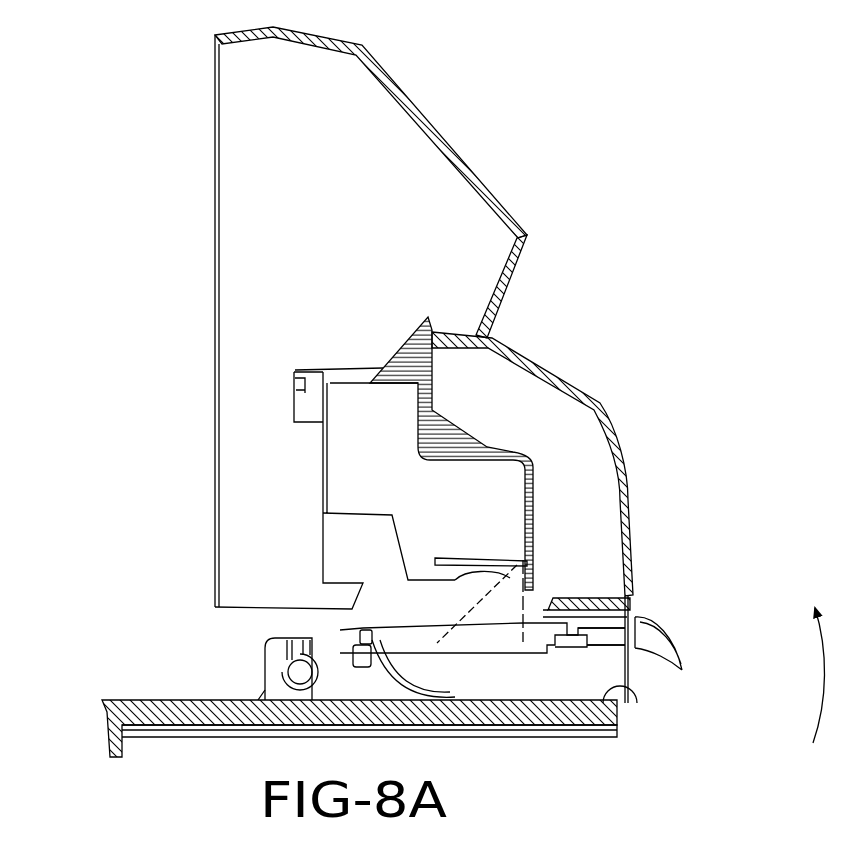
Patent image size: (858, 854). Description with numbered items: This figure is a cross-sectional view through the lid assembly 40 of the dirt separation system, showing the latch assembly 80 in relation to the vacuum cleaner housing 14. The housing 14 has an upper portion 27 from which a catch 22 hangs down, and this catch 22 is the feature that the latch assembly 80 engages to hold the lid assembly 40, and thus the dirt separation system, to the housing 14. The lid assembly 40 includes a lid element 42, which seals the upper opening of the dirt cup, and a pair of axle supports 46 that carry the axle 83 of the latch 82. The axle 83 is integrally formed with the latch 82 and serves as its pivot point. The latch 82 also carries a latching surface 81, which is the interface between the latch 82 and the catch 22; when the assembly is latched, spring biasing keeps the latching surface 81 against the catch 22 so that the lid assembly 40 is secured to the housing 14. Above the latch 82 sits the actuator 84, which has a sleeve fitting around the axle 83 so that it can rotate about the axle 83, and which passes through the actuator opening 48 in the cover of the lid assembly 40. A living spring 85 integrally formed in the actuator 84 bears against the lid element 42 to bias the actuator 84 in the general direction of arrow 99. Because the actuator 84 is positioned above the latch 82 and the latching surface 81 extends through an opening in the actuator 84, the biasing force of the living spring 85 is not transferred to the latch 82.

The vacuum cleaner housing 14 is at (488, 144).
The upper portion 27 is at (510, 212).
The catch 22 is at (535, 502).
The lid assembly 40 is at (670, 512).
The latch assembly 80 is at (682, 624).
The actuator 84 is at (680, 652).
The latching surface 81 is at (458, 582).
The latch 82 is at (347, 690).
The axle 83 is at (300, 672).
The axle supports 46 is at (273, 690).
The lid element 42 is at (122, 700).
The living spring 85 is at (458, 697).
The actuator opening 48 is at (637, 703).
The arrow 99 is at (820, 688).